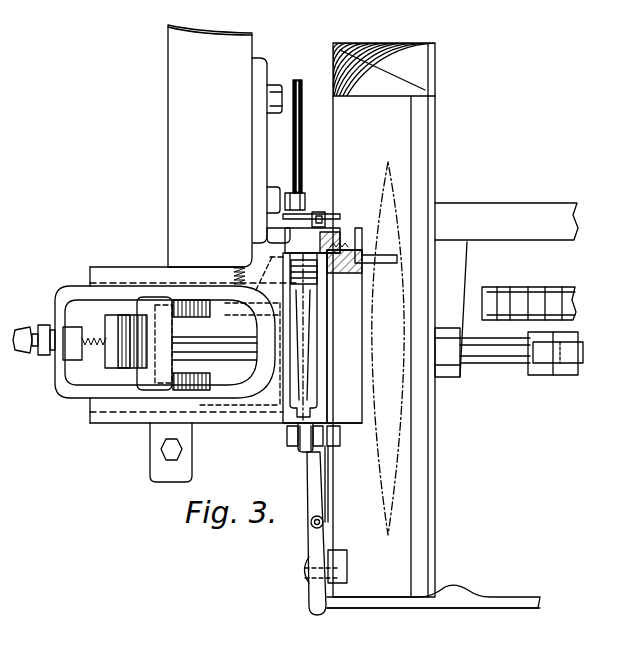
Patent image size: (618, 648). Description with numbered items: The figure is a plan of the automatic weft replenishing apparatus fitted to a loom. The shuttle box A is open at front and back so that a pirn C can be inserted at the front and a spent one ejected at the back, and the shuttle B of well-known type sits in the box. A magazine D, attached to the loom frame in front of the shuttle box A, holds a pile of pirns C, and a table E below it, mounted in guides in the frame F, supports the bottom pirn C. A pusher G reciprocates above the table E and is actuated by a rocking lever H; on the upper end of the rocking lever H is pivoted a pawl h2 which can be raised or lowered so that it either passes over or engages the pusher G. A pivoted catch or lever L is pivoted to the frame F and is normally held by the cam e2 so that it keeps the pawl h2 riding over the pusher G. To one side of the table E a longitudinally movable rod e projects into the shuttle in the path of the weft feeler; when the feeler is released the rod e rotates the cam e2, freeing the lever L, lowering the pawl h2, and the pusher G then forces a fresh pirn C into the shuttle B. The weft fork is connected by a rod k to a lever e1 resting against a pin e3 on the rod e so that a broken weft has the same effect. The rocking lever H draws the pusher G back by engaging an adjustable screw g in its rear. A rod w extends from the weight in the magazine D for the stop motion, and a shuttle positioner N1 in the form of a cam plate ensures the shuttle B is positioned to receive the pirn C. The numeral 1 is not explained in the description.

The shuttle box A is at (385, 320).
The shuttle B is at (330, 530).
The pirn C is at (310, 333).
The magazine D is at (322, 381).
The table E is at (316, 338).
The frame F is at (255, 218).
The pusher G is at (83, 297).
The rocking lever H is at (118, 343).
The catch or lever L is at (241, 331).
The shuttle positioner N1 is at (445, 598).
The rod e is at (290, 240).
The lever e1 is at (303, 215).
The cam e2 is at (305, 311).
The pin e3 is at (292, 205).
The adjustable screw g is at (55, 353).
The pawl h2 is at (197, 343).
The rod k is at (306, 136).
The rod w is at (326, 218).
The plate 1 is at (178, 302).